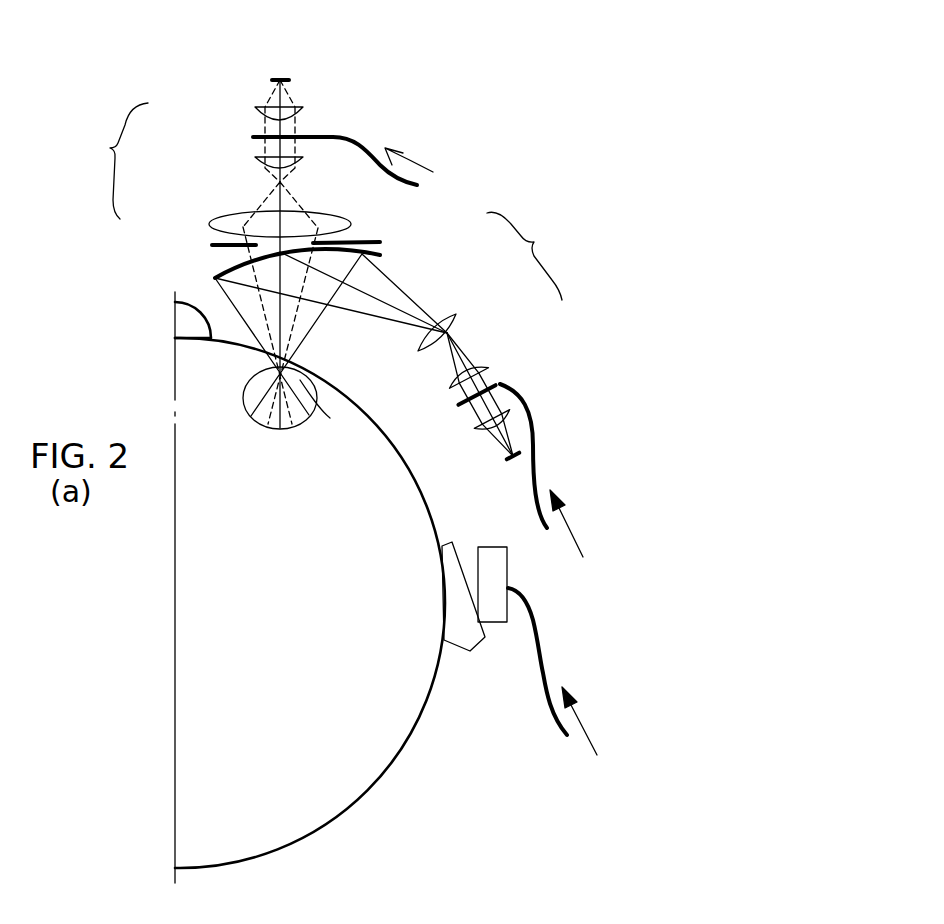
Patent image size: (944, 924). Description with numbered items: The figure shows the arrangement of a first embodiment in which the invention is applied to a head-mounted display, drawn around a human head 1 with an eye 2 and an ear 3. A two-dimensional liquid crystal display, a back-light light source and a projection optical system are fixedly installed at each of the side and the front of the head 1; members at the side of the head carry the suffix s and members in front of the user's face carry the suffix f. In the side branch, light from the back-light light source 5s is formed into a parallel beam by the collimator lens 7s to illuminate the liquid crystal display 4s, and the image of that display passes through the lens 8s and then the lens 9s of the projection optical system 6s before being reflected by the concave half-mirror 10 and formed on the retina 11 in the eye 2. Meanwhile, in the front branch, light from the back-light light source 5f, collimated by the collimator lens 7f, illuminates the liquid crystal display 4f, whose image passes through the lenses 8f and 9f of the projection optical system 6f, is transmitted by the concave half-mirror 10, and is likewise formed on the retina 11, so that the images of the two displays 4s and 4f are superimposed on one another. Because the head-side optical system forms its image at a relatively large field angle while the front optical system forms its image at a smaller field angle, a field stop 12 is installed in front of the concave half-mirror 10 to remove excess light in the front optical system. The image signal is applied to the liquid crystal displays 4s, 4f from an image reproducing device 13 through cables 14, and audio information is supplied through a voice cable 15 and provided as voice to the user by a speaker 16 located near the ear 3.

The human head 1 is at (345, 720).
The eye 2 is at (318, 377).
The ear 3 is at (454, 560).
The liquid crystal display 4f is at (305, 137).
The liquid crystal display 4s is at (497, 387).
The back-light light source 5f is at (283, 80).
The back-light light source 5s is at (518, 453).
The projection optical system 6f is at (108, 161).
The projection optical system 6s is at (529, 256).
The collimator lens 7f is at (300, 107).
The collimator lens 7s is at (512, 410).
The lens 8f is at (257, 158).
The lens 8s is at (486, 366).
The lens 9f is at (213, 222).
The lens 9s is at (453, 317).
The concave half-mirror 10 is at (382, 253).
The retina 11 is at (305, 415).
The field stop 12 is at (210, 244).
The image reproducing device 13 is at (535, 469).
The cables 14 is at (367, 143).
The voice cable 15 is at (543, 670).
The speaker 16 is at (500, 545).